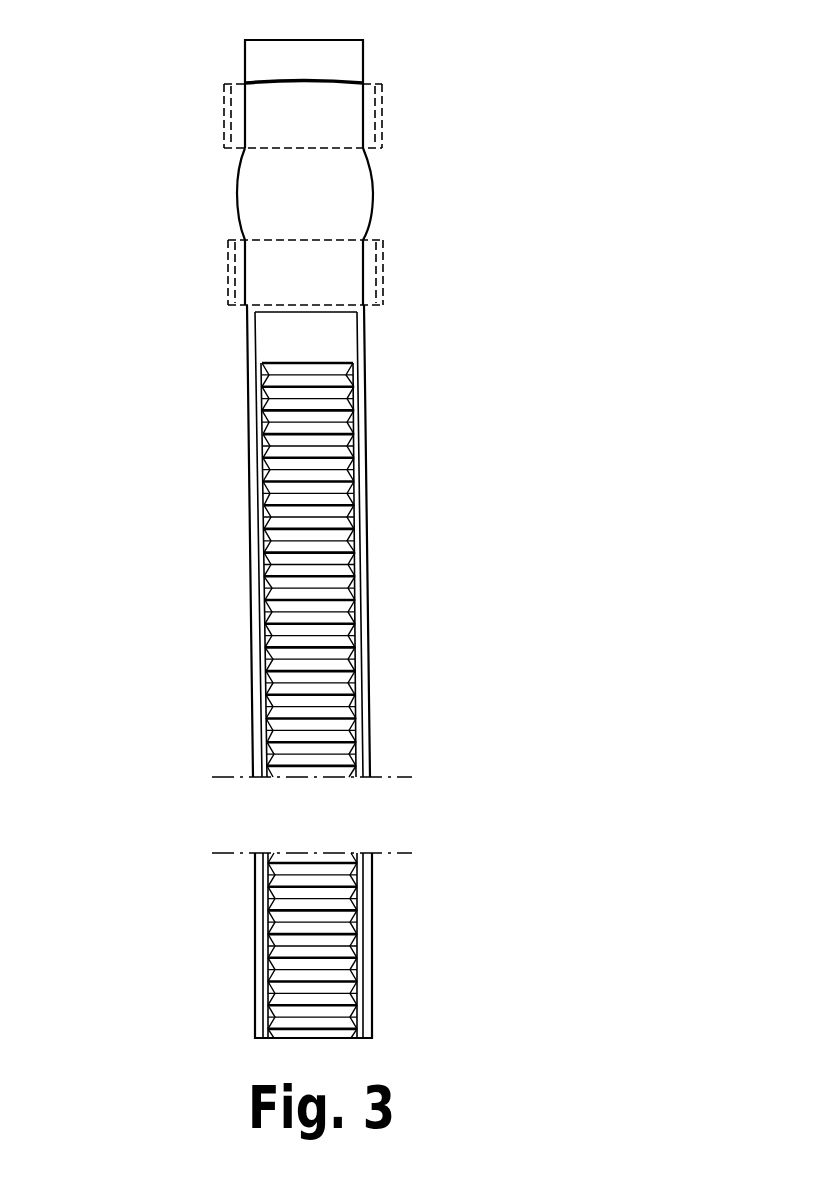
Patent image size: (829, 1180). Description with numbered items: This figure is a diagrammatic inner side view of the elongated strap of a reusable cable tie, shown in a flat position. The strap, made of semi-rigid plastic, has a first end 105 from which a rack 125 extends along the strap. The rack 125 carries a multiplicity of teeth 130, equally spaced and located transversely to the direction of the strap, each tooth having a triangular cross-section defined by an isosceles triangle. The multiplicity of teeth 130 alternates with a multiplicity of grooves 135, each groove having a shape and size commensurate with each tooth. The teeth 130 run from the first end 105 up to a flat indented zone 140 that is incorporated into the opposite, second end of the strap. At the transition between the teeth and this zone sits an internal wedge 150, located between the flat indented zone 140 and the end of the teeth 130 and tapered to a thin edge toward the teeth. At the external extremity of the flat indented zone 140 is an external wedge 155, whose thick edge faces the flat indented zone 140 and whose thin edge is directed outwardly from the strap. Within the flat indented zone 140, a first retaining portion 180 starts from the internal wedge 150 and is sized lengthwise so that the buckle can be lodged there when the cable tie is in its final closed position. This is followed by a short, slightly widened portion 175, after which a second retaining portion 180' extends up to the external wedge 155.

The first end 105 is at (218, 936).
The rack 125 is at (236, 700).
The multiplicity of teeth 130 is at (318, 667).
The multiplicity of grooves 135 is at (325, 610).
The flat indented zone 140 is at (206, 191).
The internal wedge 150 is at (310, 338).
The external wedge 155 is at (340, 66).
The short, slightly widened portion 175 is at (345, 195).
The first retaining portion 180 is at (352, 272).
The second retaining portion 180' is at (352, 116).